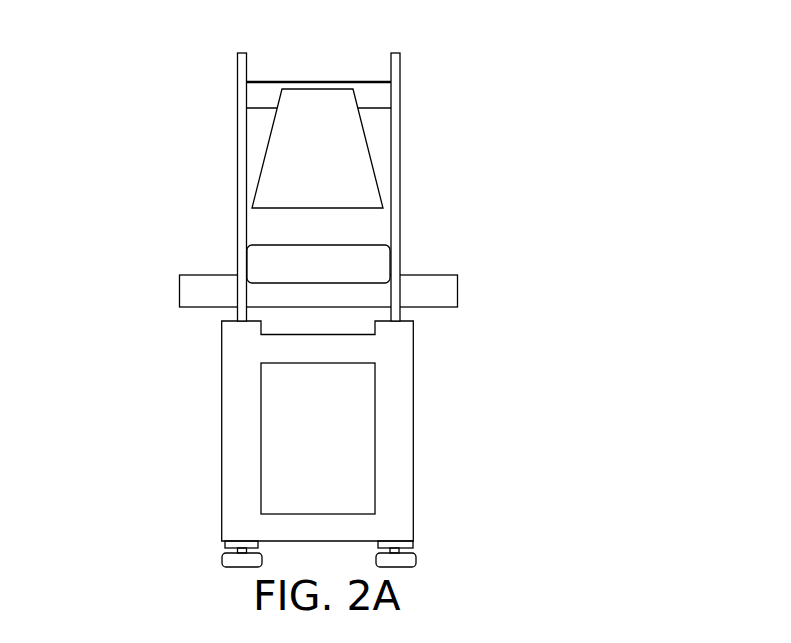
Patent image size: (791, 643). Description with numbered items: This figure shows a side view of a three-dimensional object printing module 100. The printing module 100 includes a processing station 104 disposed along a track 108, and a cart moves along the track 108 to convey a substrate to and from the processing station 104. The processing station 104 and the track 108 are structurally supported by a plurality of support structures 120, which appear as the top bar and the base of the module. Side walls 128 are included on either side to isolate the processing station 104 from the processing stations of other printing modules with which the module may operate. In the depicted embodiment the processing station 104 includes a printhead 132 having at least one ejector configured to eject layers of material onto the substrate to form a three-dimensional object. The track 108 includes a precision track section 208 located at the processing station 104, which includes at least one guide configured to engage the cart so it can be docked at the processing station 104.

The three-dimensional object printing module 100 is at (126, 101).
The processing station 104 is at (225, 117).
The track 108 is at (430, 287).
The support structures 120 is at (370, 81).
The side walls 128 is at (237, 82).
The printhead 132 is at (346, 130).
The precision track section 208 is at (226, 258).